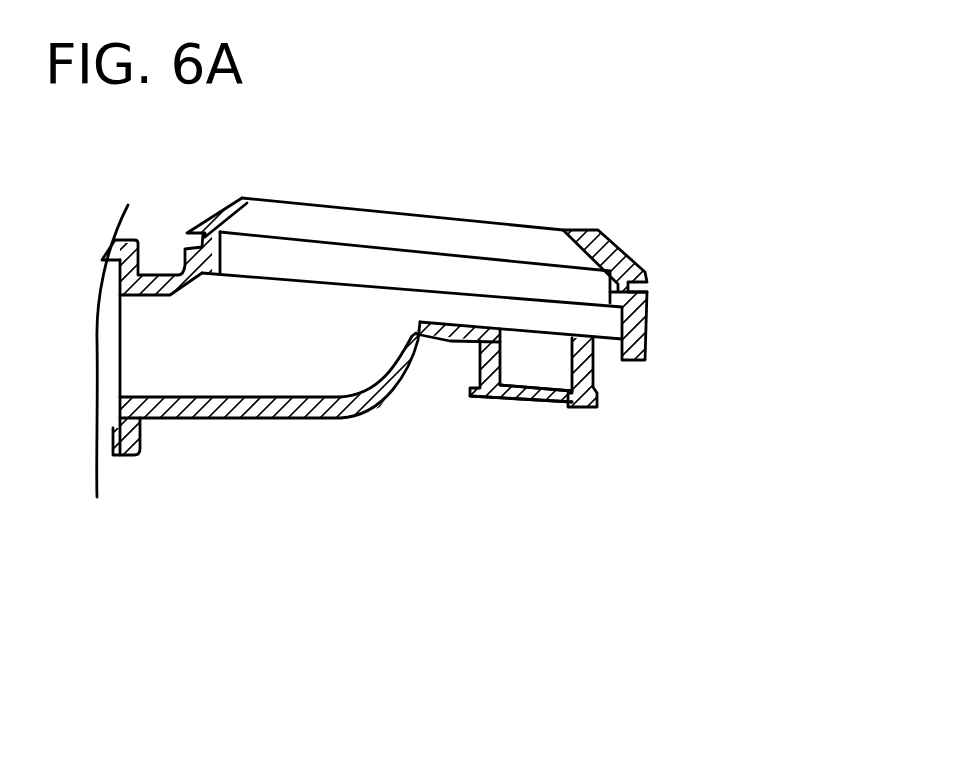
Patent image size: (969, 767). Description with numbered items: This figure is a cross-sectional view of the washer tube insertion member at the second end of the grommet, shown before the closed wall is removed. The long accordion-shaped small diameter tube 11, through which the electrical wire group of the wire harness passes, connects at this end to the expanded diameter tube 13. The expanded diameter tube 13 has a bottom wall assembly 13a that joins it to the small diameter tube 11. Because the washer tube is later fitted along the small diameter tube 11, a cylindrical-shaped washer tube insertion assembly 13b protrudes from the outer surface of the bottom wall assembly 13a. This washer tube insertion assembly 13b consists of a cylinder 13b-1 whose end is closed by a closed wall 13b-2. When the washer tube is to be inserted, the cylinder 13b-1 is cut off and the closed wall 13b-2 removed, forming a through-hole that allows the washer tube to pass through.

The small diameter tube 11 is at (120, 455).
The expanded diameter tube 13 is at (647, 318).
The bottom wall assembly 13a is at (452, 342).
The washer tube insertion assembly 13b is at (463, 358).
The cylinder 13b-1 is at (593, 372).
The closed wall 13b-2 is at (522, 398).